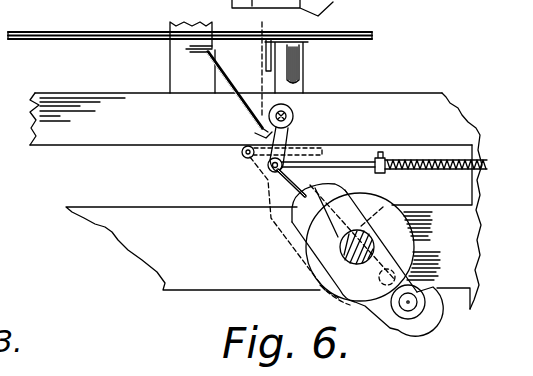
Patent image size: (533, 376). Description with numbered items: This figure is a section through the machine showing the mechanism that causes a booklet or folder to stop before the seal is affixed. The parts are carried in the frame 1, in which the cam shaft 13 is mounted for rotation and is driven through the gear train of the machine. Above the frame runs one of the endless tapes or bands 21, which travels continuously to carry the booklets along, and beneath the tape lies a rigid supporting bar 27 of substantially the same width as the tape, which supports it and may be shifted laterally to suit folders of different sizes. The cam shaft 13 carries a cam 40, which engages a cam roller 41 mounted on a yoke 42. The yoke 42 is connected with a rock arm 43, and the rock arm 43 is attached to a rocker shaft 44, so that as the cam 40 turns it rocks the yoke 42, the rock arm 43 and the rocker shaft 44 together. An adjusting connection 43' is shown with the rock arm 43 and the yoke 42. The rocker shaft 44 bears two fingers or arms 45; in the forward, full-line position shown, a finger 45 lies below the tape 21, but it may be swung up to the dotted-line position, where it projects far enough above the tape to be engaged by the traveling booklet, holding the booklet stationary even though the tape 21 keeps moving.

The frame 1 is at (100, 83).
The cam shaft 13 is at (362, 231).
The endless belt or tape 21 is at (88, 33).
The supporting bar 27 is at (106, 41).
The cam 40 is at (312, 272).
The cam roller 41 is at (420, 292).
The yoke 42 is at (292, 233).
The rock arm 43 is at (268, 149).
The adjusting screw 43' is at (364, 159).
The rocker shaft 44 is at (291, 113).
The finger or arm 45 is at (262, 62).